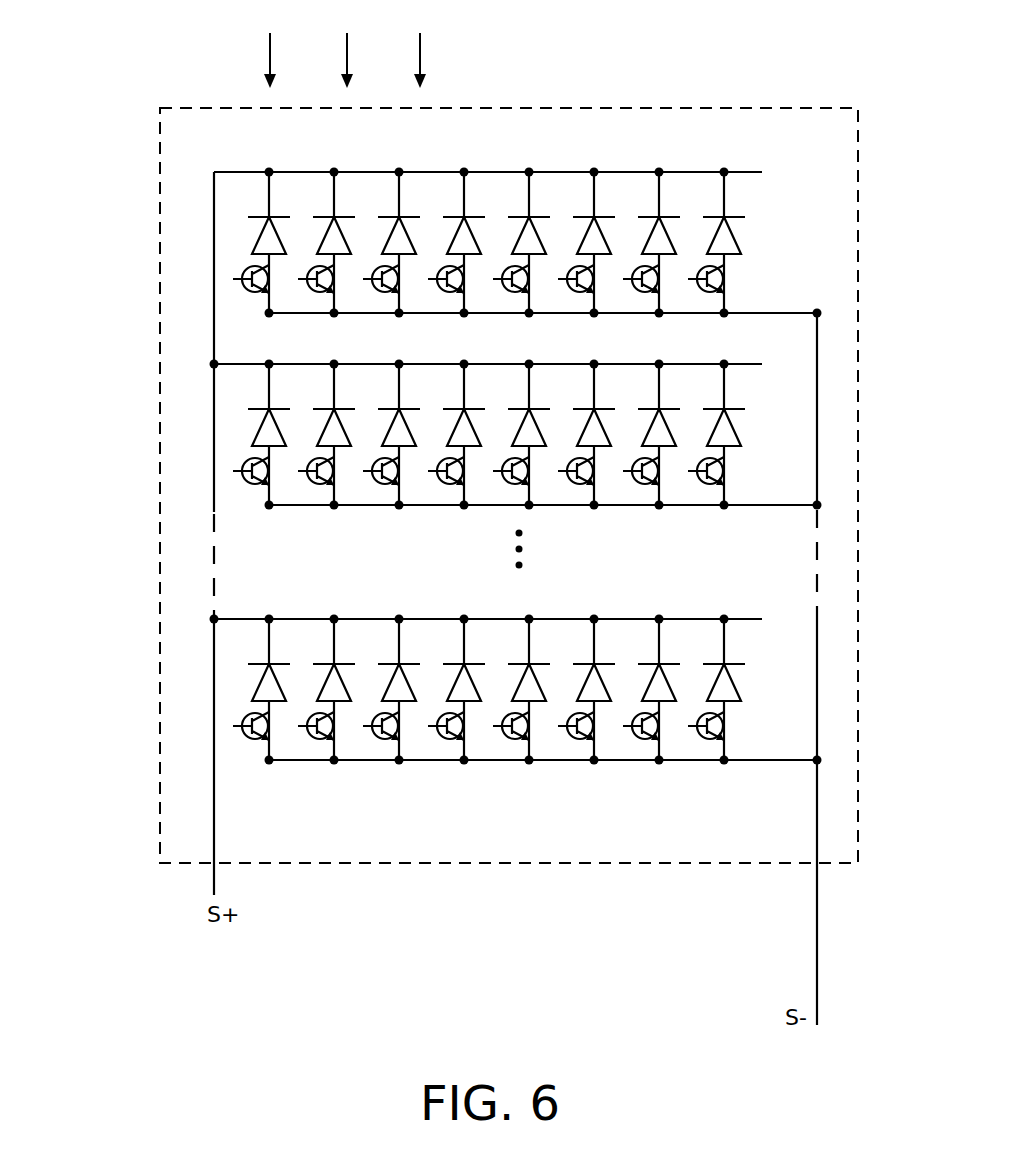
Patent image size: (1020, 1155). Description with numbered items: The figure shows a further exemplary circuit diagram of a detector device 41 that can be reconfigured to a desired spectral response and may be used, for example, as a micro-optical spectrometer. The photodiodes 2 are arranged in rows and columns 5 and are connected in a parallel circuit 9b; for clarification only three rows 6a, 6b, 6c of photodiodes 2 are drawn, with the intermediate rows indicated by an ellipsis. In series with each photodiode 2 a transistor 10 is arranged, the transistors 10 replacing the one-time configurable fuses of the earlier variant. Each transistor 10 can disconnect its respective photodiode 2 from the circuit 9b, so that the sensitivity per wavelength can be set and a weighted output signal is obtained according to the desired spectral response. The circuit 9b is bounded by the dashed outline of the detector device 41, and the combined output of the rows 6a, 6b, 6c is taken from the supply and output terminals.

The photodiode 2 is at (392, 217).
The column 5 is at (345, 47).
The first row of photodiodes 6a is at (435, 240).
The second row of photodiodes 6b is at (134, 430).
The third row of photodiodes 6c is at (134, 672).
The circuit 9b is at (819, 344).
The transistor 10 is at (375, 287).
The detector device 41 is at (694, 99).